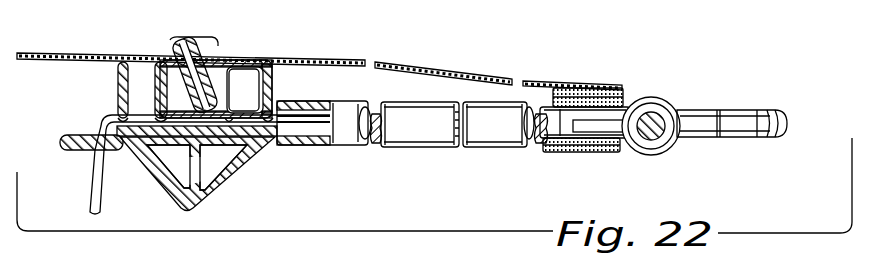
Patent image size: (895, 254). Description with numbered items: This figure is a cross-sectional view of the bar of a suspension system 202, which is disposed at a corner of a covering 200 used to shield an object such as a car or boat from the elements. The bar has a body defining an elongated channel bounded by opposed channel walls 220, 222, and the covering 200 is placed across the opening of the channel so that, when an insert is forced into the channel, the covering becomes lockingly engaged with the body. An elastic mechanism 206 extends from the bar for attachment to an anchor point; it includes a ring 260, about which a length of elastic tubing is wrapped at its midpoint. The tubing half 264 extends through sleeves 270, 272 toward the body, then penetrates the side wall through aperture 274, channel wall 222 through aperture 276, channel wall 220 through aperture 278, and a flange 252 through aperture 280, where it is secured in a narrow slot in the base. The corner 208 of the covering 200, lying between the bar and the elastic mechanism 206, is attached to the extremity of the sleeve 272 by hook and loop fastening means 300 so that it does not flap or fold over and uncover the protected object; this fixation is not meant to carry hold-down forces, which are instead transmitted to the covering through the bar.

The covering 200 is at (106, 31).
The suspension system 202 is at (456, 169).
The elastic mechanism 206 is at (437, 70).
The corner 208 is at (437, 101).
The channel wall 220 is at (156, 74).
The channel wall 222 is at (240, 74).
The flange 252 is at (118, 68).
The ring 260 is at (761, 110).
The tubing half 264 is at (377, 136).
The sleeve 270 is at (413, 142).
The sleeve 272 is at (511, 143).
The aperture 274 is at (282, 103).
The aperture 276 is at (244, 90).
The aperture 278 is at (150, 92).
The aperture 280 is at (117, 116).
The hook and loop fastening means 300 is at (629, 98).